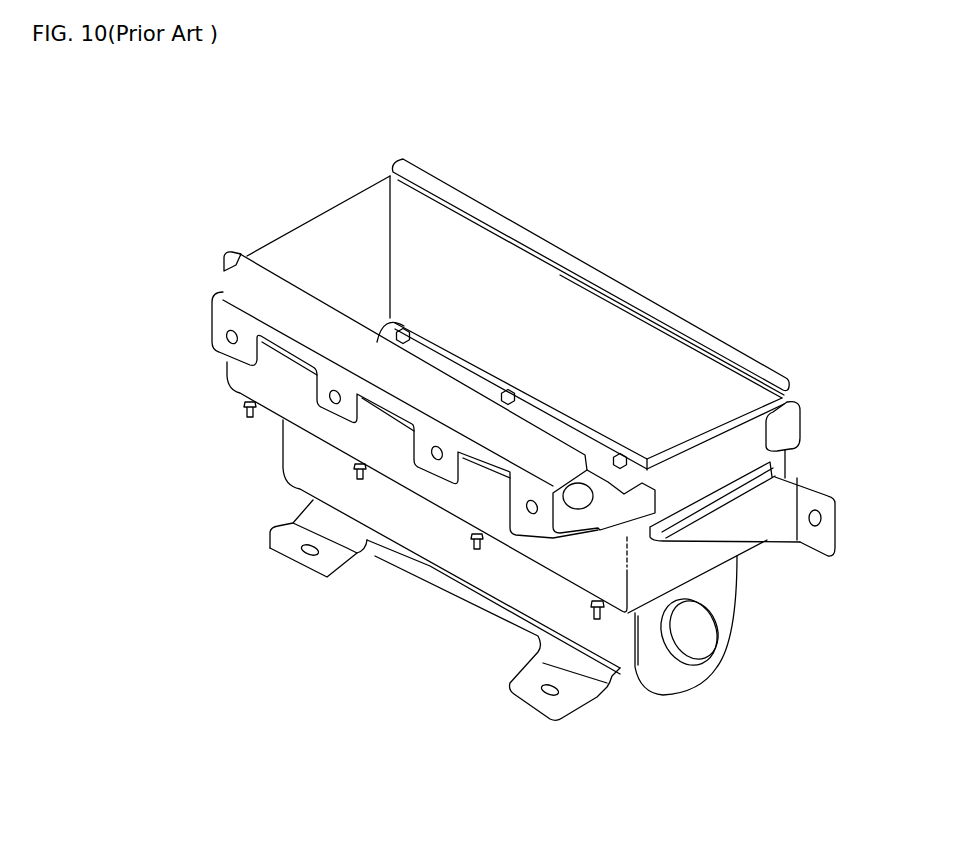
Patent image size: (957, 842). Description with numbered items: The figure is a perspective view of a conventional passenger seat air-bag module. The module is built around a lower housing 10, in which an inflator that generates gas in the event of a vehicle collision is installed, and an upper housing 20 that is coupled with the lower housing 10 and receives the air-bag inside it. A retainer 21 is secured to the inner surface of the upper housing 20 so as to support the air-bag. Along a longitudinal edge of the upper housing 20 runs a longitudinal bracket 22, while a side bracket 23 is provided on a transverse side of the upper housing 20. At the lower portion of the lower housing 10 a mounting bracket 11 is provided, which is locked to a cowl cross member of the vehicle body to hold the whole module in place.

The lower housing 10 is at (463, 560).
The mounting bracket 11 is at (345, 537).
The upper housing 20 is at (717, 557).
The retainer 21 is at (467, 378).
The longitudinal bracket 22 is at (357, 357).
The side bracket 23 is at (790, 496).